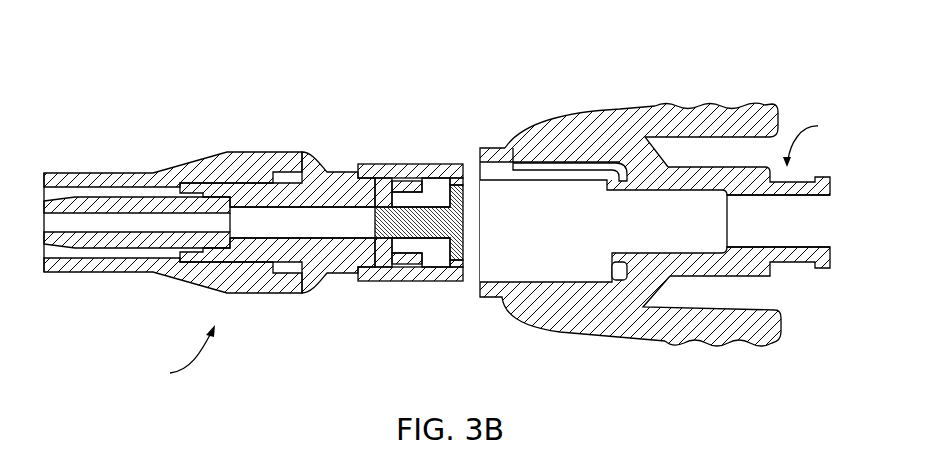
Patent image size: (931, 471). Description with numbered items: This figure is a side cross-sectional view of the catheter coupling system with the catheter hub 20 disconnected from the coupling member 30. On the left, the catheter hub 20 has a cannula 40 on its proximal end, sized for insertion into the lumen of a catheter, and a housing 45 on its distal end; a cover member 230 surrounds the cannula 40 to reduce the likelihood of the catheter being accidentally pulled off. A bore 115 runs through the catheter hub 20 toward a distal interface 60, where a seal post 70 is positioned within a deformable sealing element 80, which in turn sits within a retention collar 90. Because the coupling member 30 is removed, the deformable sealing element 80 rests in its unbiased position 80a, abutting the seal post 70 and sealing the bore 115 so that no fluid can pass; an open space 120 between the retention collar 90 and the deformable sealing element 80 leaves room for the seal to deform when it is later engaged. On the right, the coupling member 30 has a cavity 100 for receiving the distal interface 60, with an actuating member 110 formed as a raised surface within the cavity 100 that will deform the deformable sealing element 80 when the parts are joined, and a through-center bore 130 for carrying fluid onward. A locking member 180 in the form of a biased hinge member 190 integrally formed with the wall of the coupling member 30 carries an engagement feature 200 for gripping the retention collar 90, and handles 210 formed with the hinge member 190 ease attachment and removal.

The catheter hub 20 is at (178, 353).
The coupling member 30 is at (809, 141).
The cannula 40 is at (158, 204).
The housing 45 is at (333, 178).
The distal interface 60 is at (471, 294).
The seal post 70 is at (466, 202).
The deformable sealing element 80 is at (412, 258).
The unbiased position 80a is at (462, 178).
The retention collar 90 is at (365, 277).
The cavity 100 is at (556, 203).
The actuating member 110 is at (612, 262).
The bore 115 is at (248, 222).
The open space 120 is at (442, 172).
The through-center bore 130 is at (748, 110).
The locking member 180 is at (613, 120).
The biased hinge member 190 is at (686, 200).
The engagement feature 200 is at (514, 163).
The handles 210 is at (768, 344).
The cover member 230 is at (112, 178).